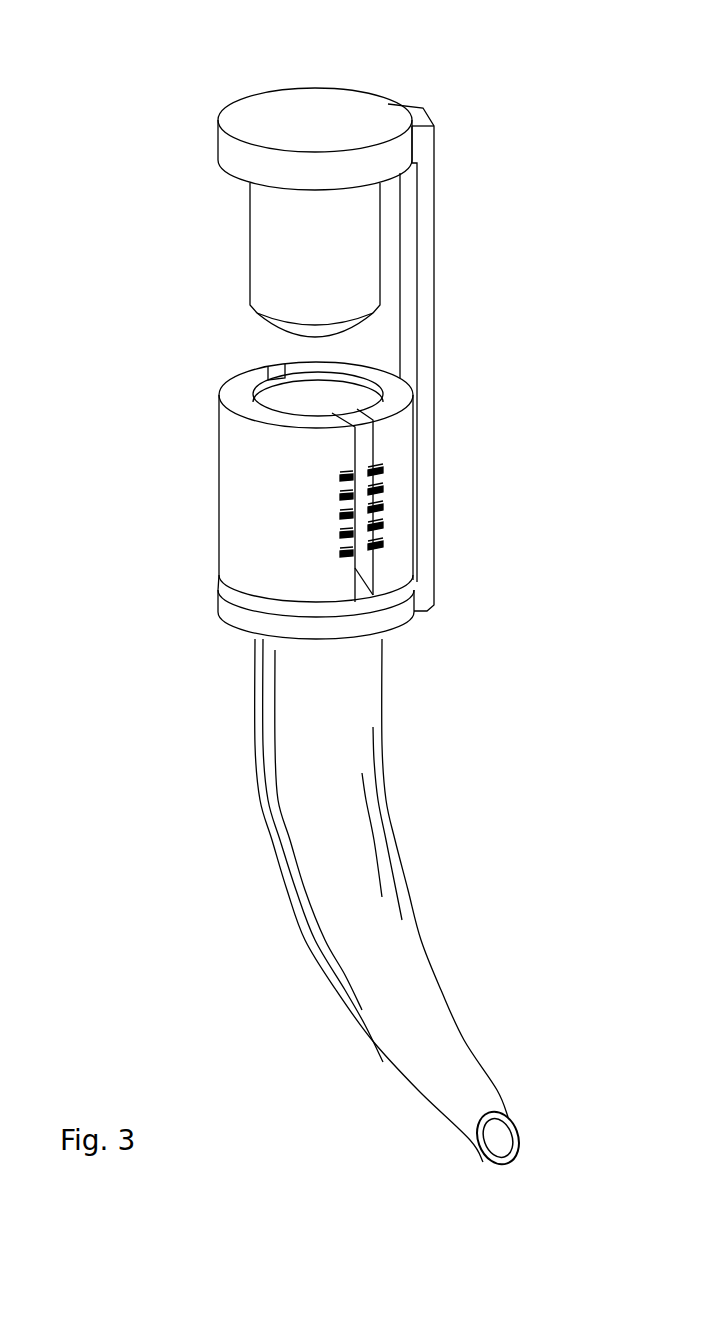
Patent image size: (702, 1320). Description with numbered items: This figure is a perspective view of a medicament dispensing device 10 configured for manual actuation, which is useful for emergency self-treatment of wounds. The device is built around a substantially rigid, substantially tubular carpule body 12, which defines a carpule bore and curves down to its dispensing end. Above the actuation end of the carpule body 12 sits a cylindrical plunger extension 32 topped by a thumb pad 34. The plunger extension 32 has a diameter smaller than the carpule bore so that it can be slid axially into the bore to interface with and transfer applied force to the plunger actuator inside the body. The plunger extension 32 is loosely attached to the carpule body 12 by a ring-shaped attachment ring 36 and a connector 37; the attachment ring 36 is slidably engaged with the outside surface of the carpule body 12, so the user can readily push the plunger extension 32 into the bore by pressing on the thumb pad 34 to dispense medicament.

The medicament dispensing device 10 is at (466, 737).
The carpule body 12 is at (305, 745).
The plunger extension 32 is at (268, 293).
The thumb pad 34 is at (316, 118).
The attachment ring 36 is at (226, 608).
The connector 37 is at (426, 147).